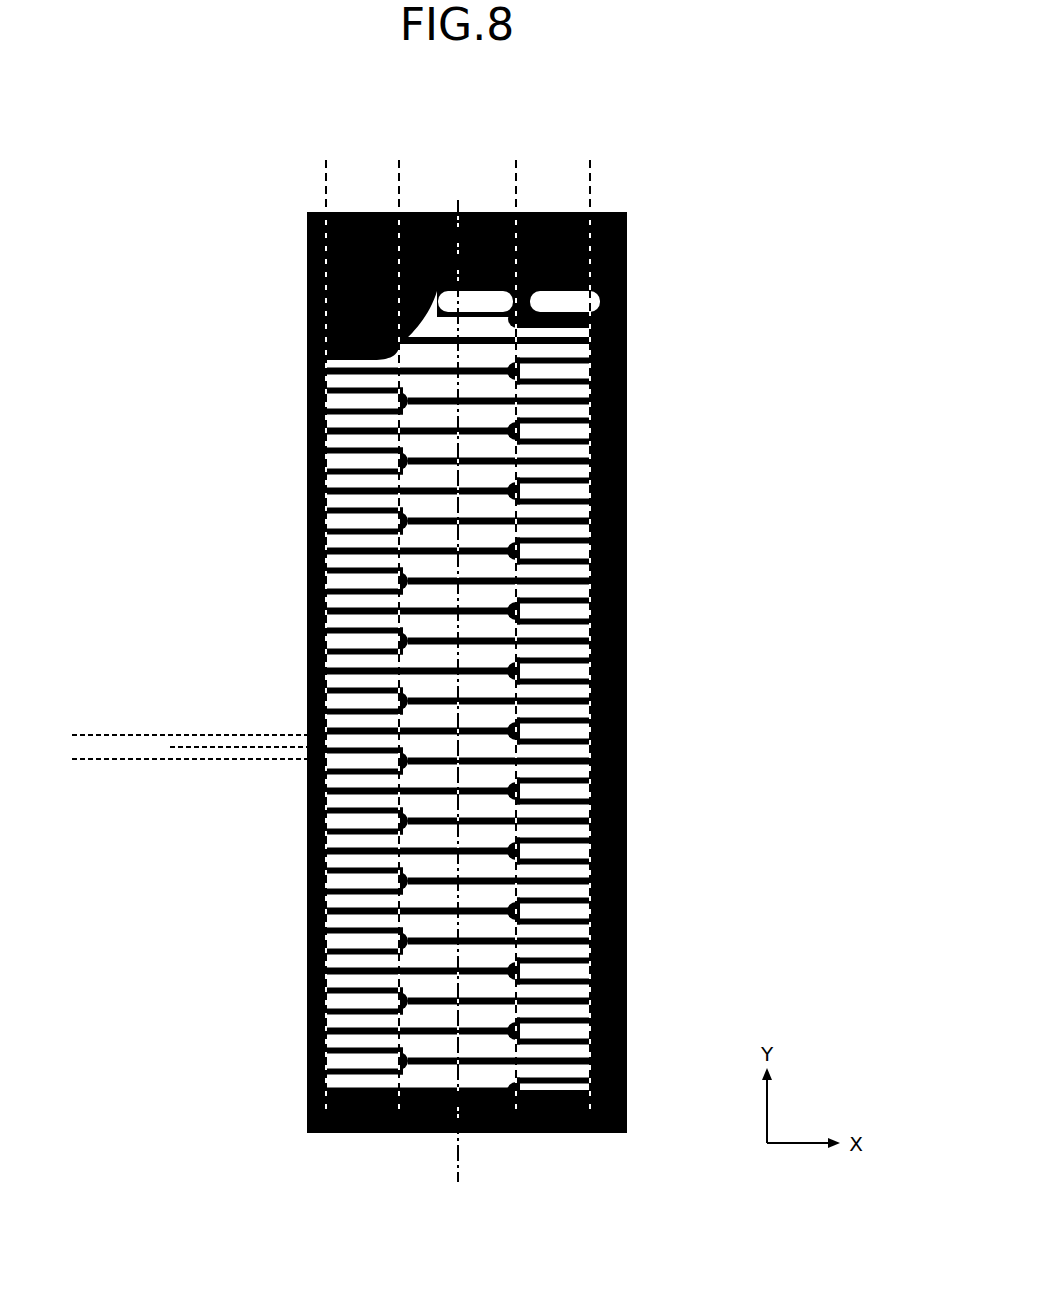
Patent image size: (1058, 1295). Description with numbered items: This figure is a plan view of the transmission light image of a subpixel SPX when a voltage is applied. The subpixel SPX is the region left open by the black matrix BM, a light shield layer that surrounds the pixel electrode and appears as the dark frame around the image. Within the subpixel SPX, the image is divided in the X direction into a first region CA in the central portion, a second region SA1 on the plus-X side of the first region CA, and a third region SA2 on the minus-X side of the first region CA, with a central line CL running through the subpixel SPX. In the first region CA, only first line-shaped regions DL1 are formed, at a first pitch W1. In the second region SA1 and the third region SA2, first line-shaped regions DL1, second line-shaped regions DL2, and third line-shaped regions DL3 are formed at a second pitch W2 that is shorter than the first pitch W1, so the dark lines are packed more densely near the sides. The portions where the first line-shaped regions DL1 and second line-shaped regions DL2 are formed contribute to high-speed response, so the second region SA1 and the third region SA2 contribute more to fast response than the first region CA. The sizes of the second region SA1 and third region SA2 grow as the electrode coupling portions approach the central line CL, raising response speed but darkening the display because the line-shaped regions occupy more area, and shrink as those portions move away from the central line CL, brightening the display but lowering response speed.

The subpixel SPX is at (420, 646).
The black matrix BM is at (627, 413).
The second region SA1 is at (522, 183).
The third region SA2 is at (393, 183).
The first region CA is at (510, 183).
The central line CL is at (461, 1173).
The first line-shaped regions DL1 is at (473, 729).
The second line-shaped regions DL2 is at (343, 762).
The third line-shaped regions DL3 is at (363, 752).
The first pitch W1 is at (113, 787).
The second pitch W2 is at (183, 787).